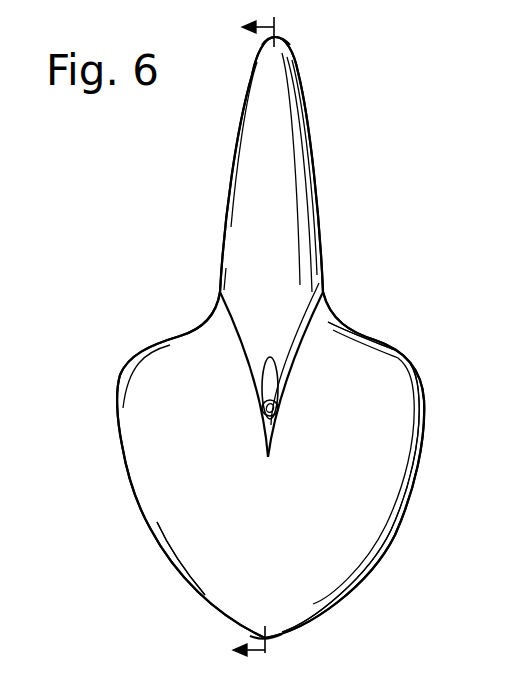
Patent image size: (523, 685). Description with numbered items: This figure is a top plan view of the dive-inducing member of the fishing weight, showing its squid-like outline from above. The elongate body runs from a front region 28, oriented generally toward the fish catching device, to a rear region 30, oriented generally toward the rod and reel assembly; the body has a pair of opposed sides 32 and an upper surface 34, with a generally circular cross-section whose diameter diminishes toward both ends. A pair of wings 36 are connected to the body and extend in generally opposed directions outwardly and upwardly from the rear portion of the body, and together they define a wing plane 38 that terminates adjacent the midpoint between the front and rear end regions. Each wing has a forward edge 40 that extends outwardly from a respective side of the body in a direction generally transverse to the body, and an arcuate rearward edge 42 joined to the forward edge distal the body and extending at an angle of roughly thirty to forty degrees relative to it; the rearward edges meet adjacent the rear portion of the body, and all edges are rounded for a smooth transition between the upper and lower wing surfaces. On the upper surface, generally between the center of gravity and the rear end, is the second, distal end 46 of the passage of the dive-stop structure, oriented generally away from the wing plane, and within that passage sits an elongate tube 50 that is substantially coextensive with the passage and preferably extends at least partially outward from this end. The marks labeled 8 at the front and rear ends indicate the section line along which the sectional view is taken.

The section line 8- 8 is at (242, 341).
The front region 28 is at (287, 46).
The rear region 30 is at (282, 640).
The opposed sides 32 is at (219, 236).
The upper surface 34 is at (269, 303).
The wings 36 is at (193, 435).
The wing plane 38 is at (171, 603).
The forward edge 40 is at (183, 335).
The arcuate rearward edge 42 is at (144, 524).
The second, distal end 46 is at (280, 409).
The elongate tube 50 is at (278, 377).